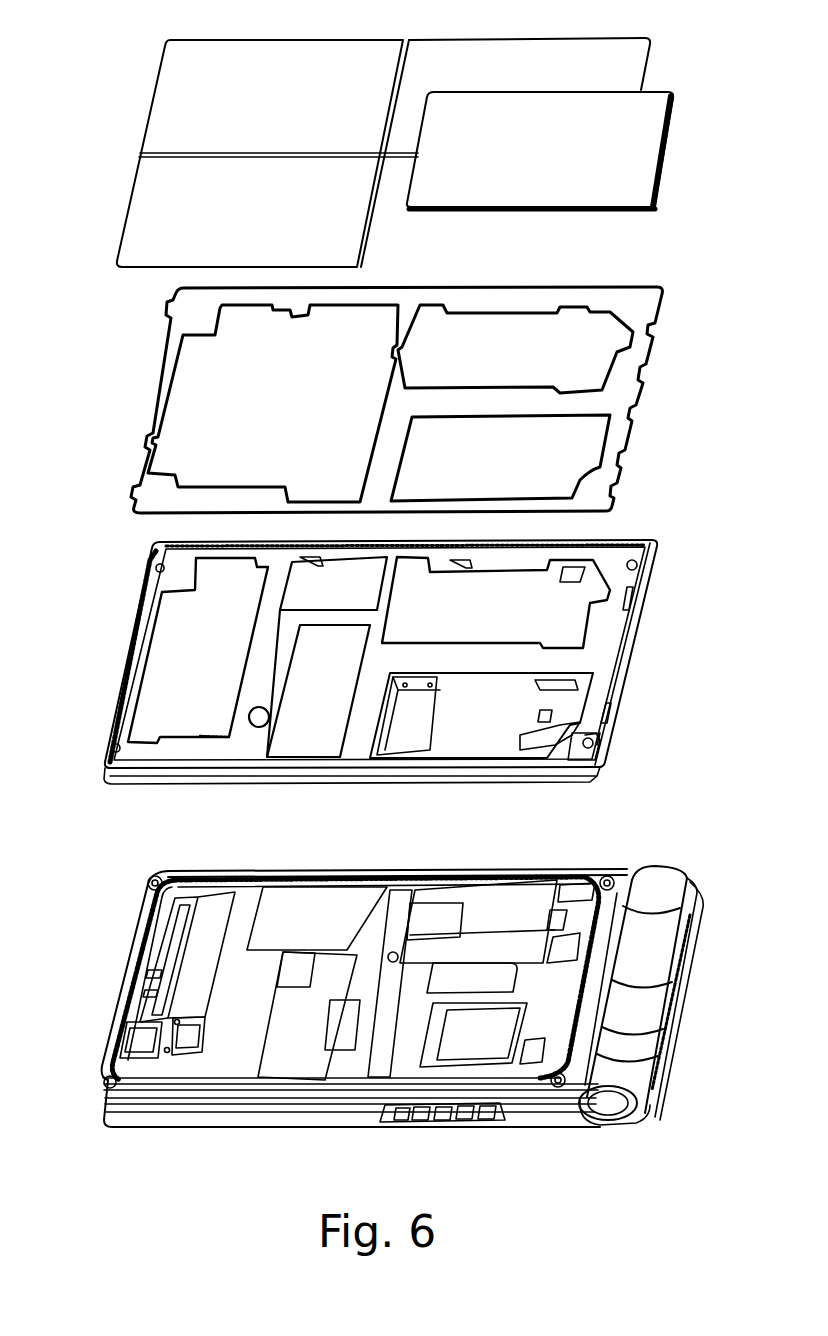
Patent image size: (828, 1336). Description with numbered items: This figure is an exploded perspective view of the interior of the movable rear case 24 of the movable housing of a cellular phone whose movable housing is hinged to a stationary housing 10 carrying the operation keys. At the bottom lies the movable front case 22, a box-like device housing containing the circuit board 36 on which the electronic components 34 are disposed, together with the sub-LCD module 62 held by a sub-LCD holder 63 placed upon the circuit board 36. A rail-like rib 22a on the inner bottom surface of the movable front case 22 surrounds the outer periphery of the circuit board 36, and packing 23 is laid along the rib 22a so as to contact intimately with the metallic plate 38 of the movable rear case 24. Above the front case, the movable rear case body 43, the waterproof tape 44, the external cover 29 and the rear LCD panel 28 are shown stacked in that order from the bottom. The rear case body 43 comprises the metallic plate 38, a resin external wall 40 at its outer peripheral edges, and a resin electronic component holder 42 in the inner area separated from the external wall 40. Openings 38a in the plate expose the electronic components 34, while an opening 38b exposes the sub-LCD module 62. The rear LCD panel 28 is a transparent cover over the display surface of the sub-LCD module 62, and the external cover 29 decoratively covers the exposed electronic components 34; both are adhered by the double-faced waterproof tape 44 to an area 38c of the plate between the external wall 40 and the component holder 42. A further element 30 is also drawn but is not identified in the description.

The stationary housing 10 is at (107, 1130).
The movable front case 22 is at (362, 1098).
The rail-like rib 22a is at (112, 1025).
The packing 23 is at (125, 965).
The movable rear case 24 is at (102, 33).
The rear LCD panel 28 is at (640, 150).
The external cover 29 is at (640, 58).
The hinge end cap 30 is at (613, 1120).
The electronic components 34 is at (495, 915).
The circuit board 36 is at (570, 887).
The metallic plate 38 is at (180, 762).
The openings 38a is at (338, 566).
The opening 38b is at (495, 753).
The area 38c is at (597, 730).
The external wall 40 is at (212, 778).
The electronic component holder 42 is at (422, 697).
The movable rear case body 43 is at (650, 636).
The waterproof tape 44 is at (627, 410).
The sub-LCD module 62 is at (520, 1060).
The sub-LCD holder 63 is at (540, 1022).